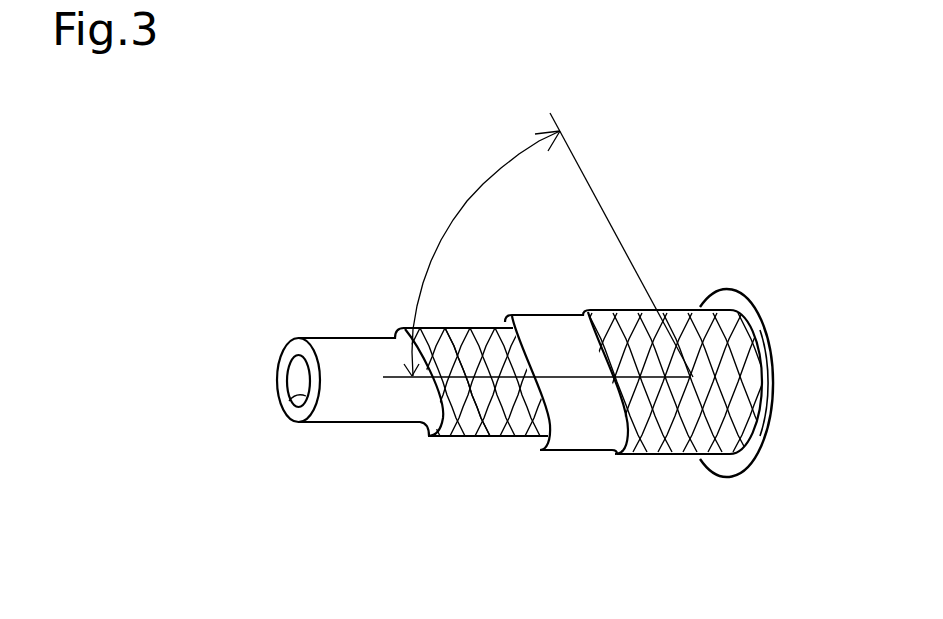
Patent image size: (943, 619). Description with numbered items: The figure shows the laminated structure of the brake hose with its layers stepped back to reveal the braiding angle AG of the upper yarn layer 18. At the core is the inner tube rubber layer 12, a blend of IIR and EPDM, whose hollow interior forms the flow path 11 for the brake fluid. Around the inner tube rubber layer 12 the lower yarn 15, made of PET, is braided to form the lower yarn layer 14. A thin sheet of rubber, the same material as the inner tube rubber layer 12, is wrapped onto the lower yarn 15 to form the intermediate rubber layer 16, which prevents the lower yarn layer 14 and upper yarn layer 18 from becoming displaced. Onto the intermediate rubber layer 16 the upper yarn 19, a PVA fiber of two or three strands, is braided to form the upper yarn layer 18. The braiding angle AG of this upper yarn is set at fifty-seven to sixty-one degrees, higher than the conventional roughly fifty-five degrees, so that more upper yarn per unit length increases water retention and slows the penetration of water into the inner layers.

The flow path 11 is at (302, 400).
The inner tube rubber layer 12 is at (340, 410).
The lower yarn layer 14 is at (488, 437).
The lower yarn 15 is at (456, 425).
The intermediate rubber layer 16 is at (583, 437).
The upper yarn 19 is at (653, 440).
The upper yarn layer 18 is at (700, 457).
The braiding angle AG is at (538, 245).